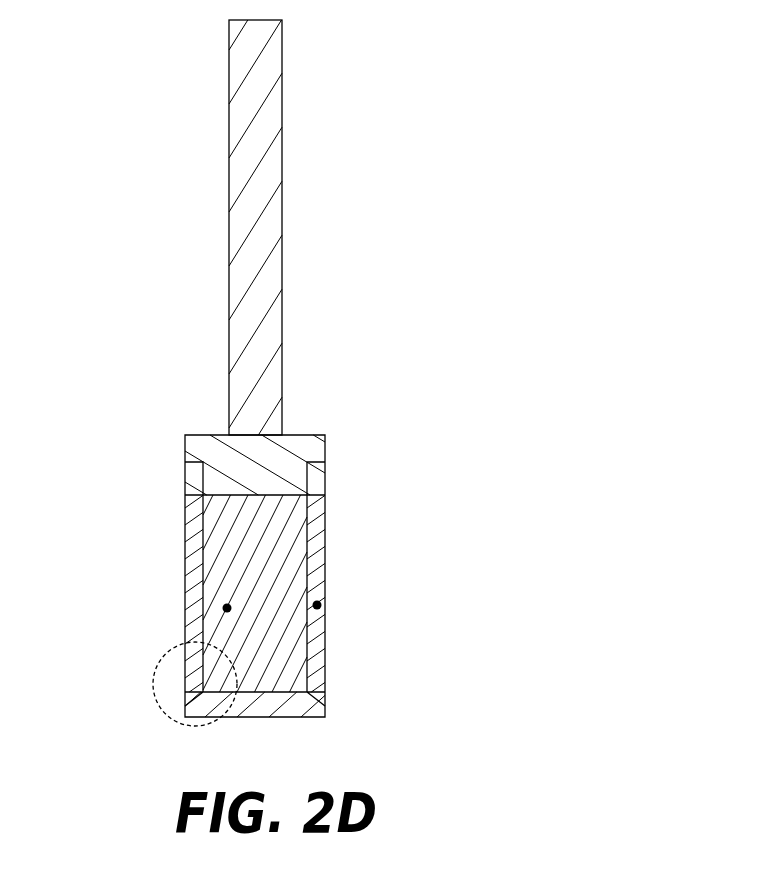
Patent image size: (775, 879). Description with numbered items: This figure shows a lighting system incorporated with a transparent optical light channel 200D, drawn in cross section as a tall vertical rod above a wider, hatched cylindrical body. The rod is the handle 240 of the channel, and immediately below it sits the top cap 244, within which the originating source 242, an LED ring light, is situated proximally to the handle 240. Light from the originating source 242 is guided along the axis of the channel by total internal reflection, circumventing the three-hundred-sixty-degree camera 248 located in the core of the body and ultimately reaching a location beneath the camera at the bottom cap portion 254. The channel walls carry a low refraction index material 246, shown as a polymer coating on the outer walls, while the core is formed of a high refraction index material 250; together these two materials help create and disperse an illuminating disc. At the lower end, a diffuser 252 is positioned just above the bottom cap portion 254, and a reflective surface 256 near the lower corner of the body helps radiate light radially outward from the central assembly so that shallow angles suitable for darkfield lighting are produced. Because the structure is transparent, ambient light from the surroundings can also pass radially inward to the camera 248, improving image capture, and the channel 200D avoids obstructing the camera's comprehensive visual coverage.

The transparent optical light channel 200D is at (382, 411).
The handle 240 is at (287, 279).
The originating source 242 is at (331, 473).
The top cap 244 is at (183, 431).
The low refraction index material 246 is at (330, 541).
The 360-degree camera 248 is at (224, 605).
The high refraction index material 250 is at (464, 593).
The diffuser 252 is at (376, 727).
The bottom cap portion 254 is at (222, 721).
The reflective surface 256 is at (152, 654).